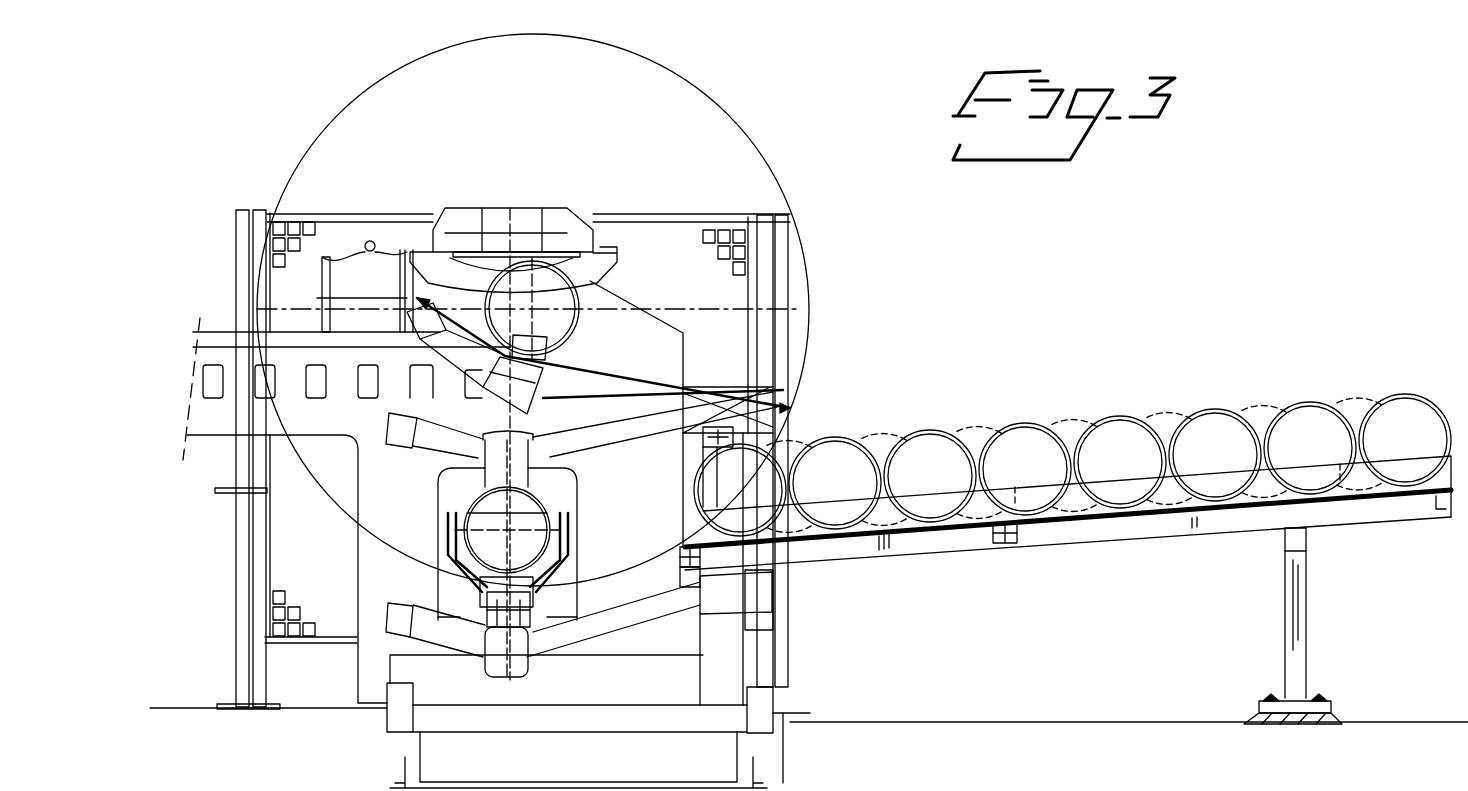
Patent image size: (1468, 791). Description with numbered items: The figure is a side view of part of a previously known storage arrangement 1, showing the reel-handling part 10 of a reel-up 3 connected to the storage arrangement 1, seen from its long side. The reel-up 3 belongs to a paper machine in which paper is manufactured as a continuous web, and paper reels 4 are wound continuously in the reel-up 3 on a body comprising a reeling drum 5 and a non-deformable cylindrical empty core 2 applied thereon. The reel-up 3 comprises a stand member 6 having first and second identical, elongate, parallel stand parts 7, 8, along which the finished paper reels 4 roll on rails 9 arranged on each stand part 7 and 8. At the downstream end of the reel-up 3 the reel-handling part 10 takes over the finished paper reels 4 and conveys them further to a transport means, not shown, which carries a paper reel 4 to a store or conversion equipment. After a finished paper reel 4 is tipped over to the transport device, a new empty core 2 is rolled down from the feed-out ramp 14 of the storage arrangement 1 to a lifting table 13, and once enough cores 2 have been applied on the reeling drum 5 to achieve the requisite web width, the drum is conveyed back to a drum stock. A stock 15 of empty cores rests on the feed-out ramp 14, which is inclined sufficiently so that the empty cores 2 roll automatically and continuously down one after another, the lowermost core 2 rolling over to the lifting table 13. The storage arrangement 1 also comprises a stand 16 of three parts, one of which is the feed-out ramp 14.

The storage arrangement 1 is at (1086, 382).
The empty core 2 is at (1208, 425).
The reel-up 3 is at (203, 417).
The paper reel 4 is at (325, 147).
The reeling drum 5 is at (548, 323).
The stand member 6 is at (186, 342).
The first stand part 7 is at (373, 687).
The second stand part 8 is at (578, 760).
The rail 9 is at (224, 335).
The reel-handling part 10 is at (763, 140).
The lifting table 13 is at (733, 598).
The feed-out ramp 14 is at (1098, 528).
The stock of empty cores 15 is at (980, 424).
The stand 16 is at (1385, 526).